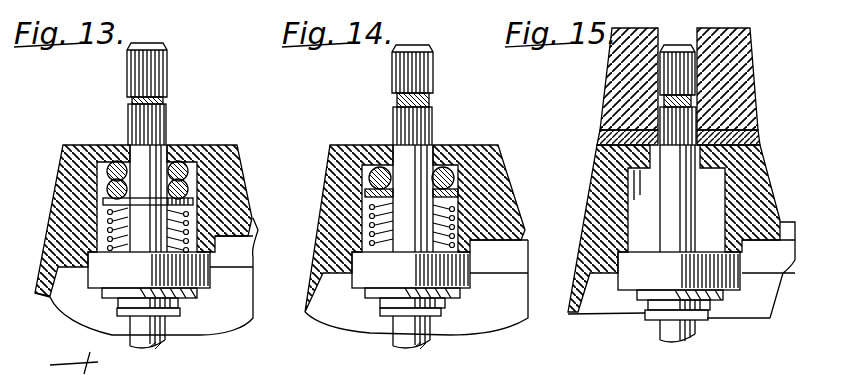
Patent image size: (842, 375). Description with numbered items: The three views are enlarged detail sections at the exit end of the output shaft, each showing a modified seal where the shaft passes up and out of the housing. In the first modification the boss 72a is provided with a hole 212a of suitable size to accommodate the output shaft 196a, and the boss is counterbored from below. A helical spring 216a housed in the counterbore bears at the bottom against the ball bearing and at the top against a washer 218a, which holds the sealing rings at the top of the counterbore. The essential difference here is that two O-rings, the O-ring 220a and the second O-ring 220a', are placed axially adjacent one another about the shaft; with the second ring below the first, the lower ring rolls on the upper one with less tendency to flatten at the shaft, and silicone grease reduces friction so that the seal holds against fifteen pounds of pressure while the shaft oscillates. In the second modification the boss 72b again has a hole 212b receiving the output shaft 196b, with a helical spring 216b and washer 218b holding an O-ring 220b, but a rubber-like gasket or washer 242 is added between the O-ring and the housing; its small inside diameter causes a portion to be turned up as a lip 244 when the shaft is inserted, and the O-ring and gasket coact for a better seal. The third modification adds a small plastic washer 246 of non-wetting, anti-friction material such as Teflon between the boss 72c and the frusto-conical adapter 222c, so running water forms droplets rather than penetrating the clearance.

In FIG. 13, the boss 72a is at (236, 170).
In FIG. 13, the hole 212a is at (165, 133).
In FIG. 13, the second O-ring 220a' is at (112, 137).
In FIG. 13, the O-ring 220a is at (108, 158).
In FIG. 13, the helical spring 216a is at (185, 216).
In FIG. 13, the washer 218a is at (149, 270).
In FIG. 13, the output shaft 196a is at (165, 340).
In FIG. 14, the boss 72b is at (485, 172).
In FIG. 14, the hole 212b is at (437, 145).
In FIG. 14, the lip 244 is at (395, 163).
In FIG. 14, the rubber-like gasket or washer 242 is at (452, 160).
In FIG. 14, the O-ring 220b is at (458, 172).
In FIG. 14, the washer 218b is at (445, 191).
In FIG. 14, the helical spring 216b is at (448, 212).
In FIG. 14, the output shaft 196b is at (430, 345).
In FIG. 15, the adapter 222c is at (730, 54).
In FIG. 15, the plastic washer 246 is at (760, 133).
In FIG. 15, the boss 72c is at (752, 181).